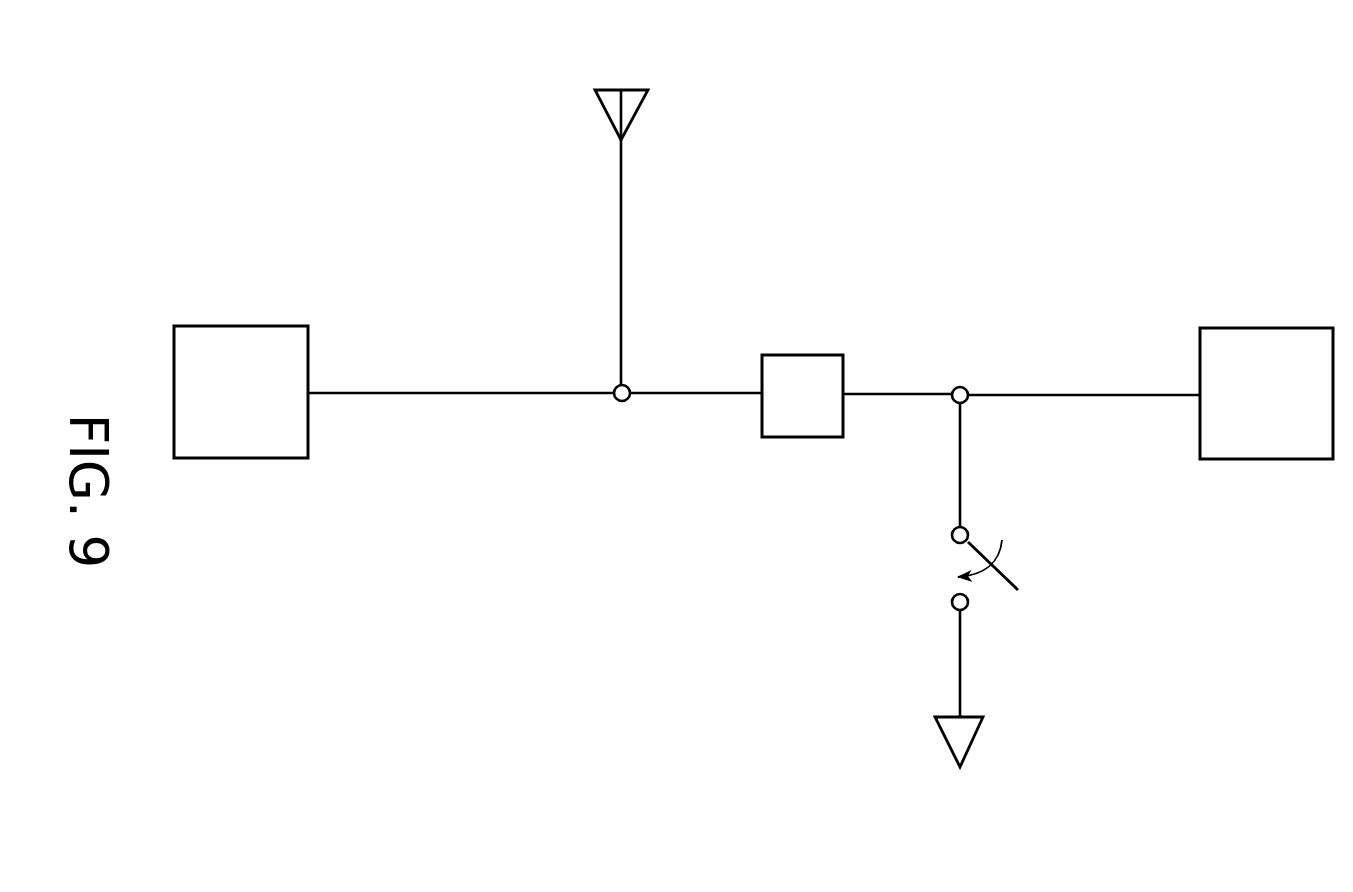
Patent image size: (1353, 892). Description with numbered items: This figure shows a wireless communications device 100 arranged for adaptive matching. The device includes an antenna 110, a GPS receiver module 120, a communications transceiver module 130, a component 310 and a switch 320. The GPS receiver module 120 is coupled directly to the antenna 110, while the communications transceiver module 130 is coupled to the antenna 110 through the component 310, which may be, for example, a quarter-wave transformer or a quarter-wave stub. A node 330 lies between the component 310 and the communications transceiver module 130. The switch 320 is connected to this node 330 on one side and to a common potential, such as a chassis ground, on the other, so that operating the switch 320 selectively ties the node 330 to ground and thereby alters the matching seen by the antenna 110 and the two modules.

The wireless communications device 100 is at (970, 180).
The antenna 110 is at (621, 262).
The GPS receiver module 120 is at (215, 413).
The communications transceiver module 130 is at (1239, 413).
The component 310 is at (830, 413).
The switch 320 is at (915, 591).
The node 330 is at (963, 383).